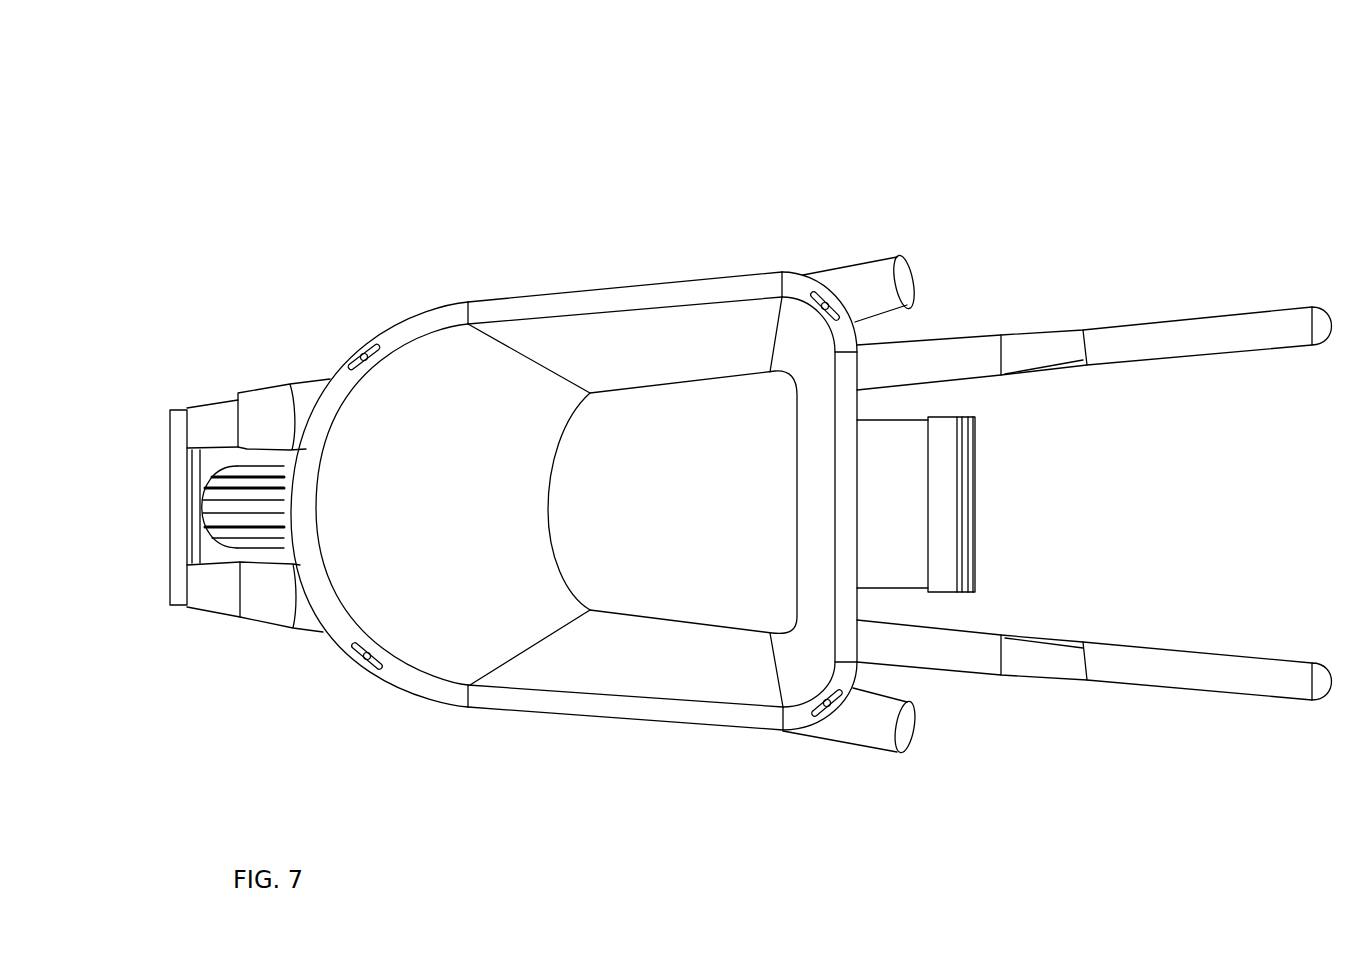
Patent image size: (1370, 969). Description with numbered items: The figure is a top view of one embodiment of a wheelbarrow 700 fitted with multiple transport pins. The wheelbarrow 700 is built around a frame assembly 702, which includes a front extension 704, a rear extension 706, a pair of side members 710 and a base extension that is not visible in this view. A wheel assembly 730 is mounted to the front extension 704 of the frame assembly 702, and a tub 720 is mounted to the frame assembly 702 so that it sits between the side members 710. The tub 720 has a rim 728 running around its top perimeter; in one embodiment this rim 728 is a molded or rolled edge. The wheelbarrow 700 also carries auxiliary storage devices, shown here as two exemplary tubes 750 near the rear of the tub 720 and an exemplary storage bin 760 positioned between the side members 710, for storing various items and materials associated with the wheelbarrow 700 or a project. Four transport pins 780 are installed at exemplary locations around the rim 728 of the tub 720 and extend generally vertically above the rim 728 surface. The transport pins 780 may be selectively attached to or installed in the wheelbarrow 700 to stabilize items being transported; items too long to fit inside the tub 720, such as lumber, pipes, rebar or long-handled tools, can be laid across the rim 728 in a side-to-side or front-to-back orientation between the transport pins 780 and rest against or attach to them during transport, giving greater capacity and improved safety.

The wheelbarrow 700 is at (951, 107).
The frame assembly 702 is at (569, 531).
The front extension 704 is at (220, 665).
The rear extension 706 is at (1094, 539).
The side members 710 is at (970, 352).
The tub 720 is at (574, 531).
The rim 728 is at (528, 305).
The wheel assembly 730 is at (153, 604).
The tubes 750 is at (878, 268).
The storage bin 760 is at (1038, 503).
The transport pins 780 is at (370, 340).